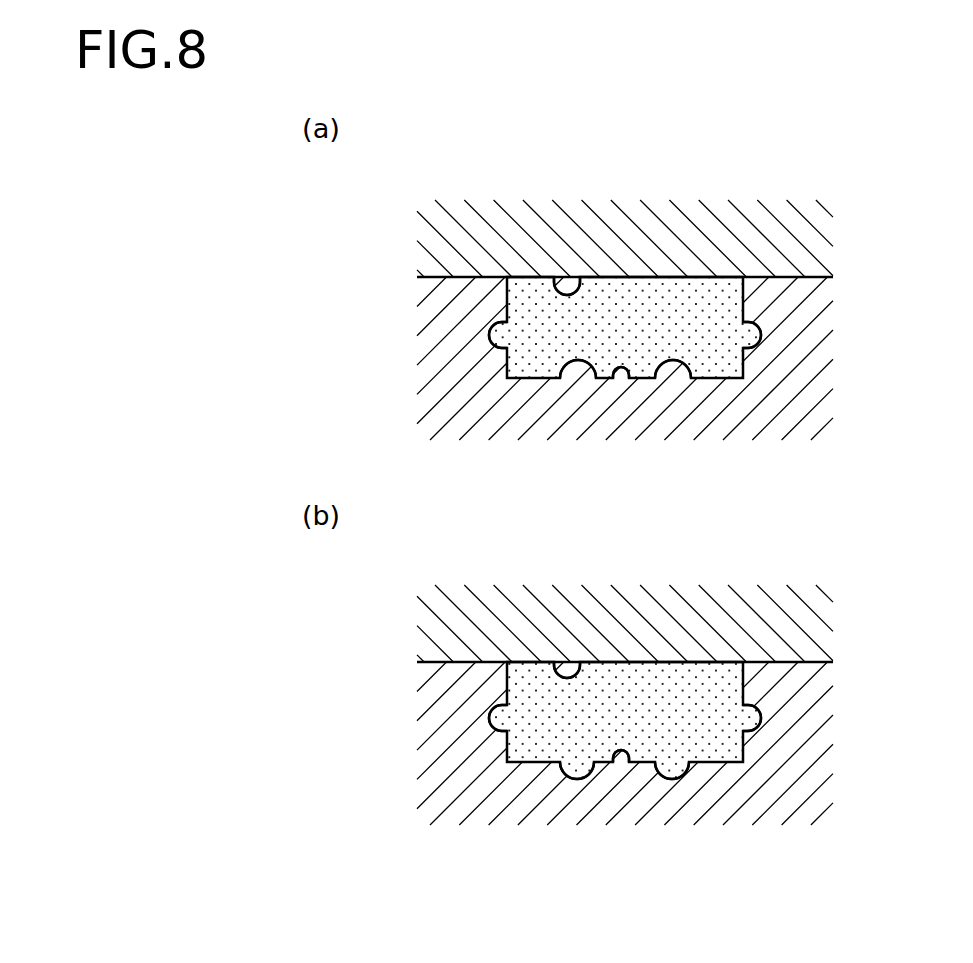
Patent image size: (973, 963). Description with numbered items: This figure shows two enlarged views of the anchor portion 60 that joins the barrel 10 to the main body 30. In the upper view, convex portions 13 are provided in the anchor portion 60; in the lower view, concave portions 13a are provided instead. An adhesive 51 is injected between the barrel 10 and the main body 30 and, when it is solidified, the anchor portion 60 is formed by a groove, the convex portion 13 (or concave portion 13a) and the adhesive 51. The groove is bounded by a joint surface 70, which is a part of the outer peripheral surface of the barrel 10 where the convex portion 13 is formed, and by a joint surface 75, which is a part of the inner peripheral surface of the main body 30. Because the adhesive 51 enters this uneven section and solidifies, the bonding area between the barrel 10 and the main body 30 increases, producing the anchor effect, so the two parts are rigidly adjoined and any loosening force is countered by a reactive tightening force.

The barrel 10 is at (765, 408).
The convex portion 13 is at (576, 358).
The concave portion 13a is at (575, 780).
The main body 30 is at (773, 233).
The adhesive 51 is at (635, 320).
The anchor portion 60 is at (685, 130).
The joint surface 70 is at (507, 323).
The joint surface 75 is at (555, 288).